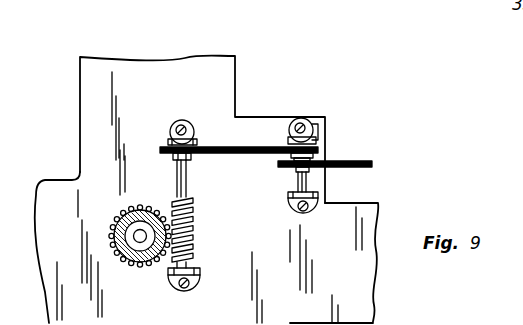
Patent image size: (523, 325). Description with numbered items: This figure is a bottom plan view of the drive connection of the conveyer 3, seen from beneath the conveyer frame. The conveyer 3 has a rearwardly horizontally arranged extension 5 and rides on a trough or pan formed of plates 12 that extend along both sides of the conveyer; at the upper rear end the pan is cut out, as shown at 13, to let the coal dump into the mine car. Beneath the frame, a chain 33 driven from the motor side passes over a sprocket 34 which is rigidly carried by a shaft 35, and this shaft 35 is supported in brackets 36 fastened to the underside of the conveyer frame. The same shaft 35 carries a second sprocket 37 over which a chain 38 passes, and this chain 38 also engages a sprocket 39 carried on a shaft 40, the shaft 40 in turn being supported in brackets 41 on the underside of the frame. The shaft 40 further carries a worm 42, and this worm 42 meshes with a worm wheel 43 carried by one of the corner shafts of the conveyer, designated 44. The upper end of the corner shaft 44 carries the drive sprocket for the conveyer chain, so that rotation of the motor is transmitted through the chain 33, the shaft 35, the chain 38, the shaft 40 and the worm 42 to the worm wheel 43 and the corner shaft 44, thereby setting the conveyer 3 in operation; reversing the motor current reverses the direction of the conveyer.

The conveyer 3 is at (184, 68).
The rearwardly horizontally arranged extension 5 is at (91, 235).
The pan structure plates 12 is at (343, 290).
The cut out 13 is at (79, 197).
The chain 33 is at (372, 164).
The sprocket 34 is at (313, 157).
The shaft 35 is at (298, 186).
The brackets 36 is at (316, 126).
The second sprocket 37 is at (313, 138).
The chain 38 is at (242, 147).
The sprocket 39 is at (189, 158).
The shaft 40 is at (188, 186).
The brackets 41 is at (193, 130).
The worm 42 is at (197, 226).
The worm wheel 43 is at (144, 214).
The corner shaft 44 is at (140, 242).